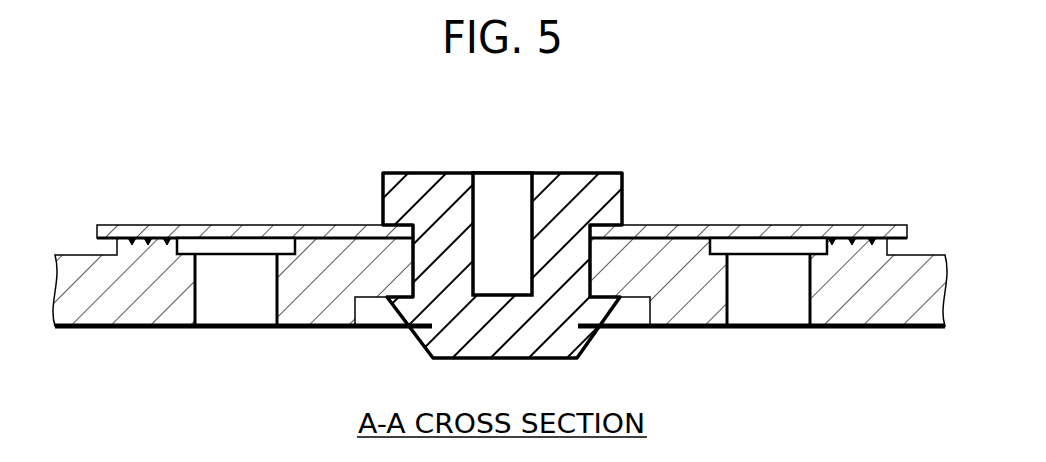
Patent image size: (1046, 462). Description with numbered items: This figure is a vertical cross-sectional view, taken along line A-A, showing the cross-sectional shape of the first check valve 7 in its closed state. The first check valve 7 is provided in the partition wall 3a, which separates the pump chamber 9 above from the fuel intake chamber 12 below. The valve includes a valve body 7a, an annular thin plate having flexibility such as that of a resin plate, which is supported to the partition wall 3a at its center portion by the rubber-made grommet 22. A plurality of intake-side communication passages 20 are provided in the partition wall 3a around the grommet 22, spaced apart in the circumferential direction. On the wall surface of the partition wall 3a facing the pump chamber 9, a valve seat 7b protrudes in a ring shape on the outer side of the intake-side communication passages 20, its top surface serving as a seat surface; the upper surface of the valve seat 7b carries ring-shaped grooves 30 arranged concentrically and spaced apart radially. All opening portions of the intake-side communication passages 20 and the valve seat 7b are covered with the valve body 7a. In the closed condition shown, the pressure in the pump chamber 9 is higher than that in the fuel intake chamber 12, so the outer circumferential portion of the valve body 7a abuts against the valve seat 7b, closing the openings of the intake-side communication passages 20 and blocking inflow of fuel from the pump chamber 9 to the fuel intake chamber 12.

The partition wall 3a is at (115, 331).
The first check valve 7 is at (497, 192).
The valve body 7a is at (223, 225).
The valve seat 7b is at (176, 248).
The pump chamber 9 is at (333, 178).
The fuel intake chamber 12 is at (340, 405).
The intake-side communication passages 20 is at (233, 298).
The grommet 22 is at (563, 172).
The grooves 30 is at (132, 236).